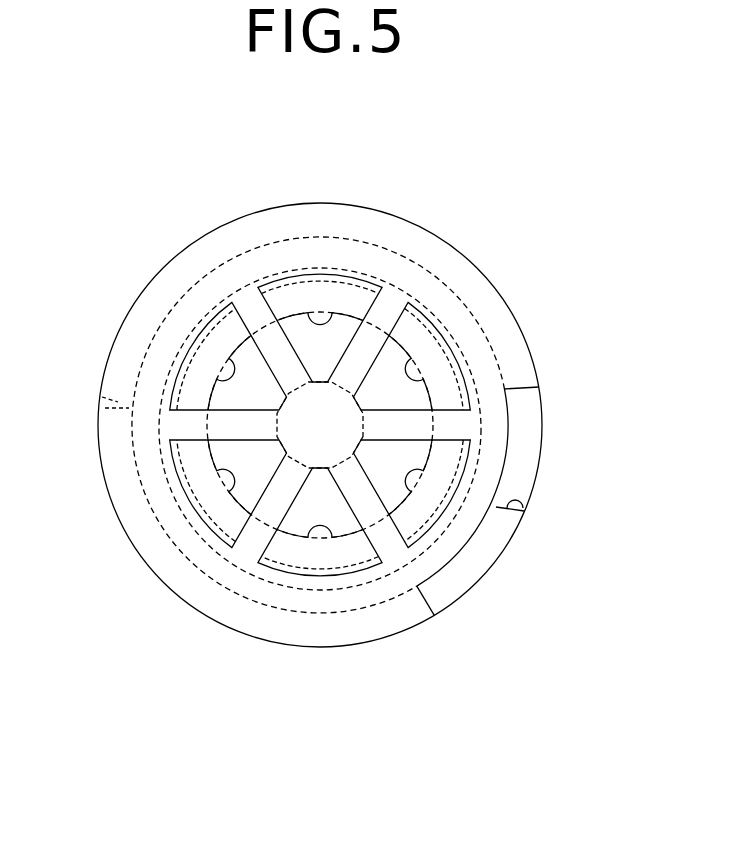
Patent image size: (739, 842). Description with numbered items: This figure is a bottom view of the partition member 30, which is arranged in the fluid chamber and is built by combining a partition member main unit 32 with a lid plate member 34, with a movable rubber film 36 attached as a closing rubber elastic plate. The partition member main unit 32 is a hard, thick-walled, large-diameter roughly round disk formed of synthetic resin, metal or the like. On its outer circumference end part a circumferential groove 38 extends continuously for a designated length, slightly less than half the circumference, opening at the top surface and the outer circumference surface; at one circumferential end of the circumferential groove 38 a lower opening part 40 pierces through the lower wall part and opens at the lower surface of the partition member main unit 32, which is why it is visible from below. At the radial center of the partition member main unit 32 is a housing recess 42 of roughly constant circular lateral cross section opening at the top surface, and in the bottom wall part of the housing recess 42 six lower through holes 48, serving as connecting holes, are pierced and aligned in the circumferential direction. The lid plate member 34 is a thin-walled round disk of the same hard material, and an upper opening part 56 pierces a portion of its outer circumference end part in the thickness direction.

The partition member 30 is at (542, 265).
The partition member main unit 32 is at (160, 533).
The lid plate member 34 is at (527, 443).
The movable rubber film 36 is at (291, 275).
The circumferential groove 38 is at (444, 280).
The lower opening part 40 is at (524, 511).
The housing recess 42 is at (176, 470).
The lower through hole 48 is at (332, 306).
The upper opening part 56 is at (103, 399).